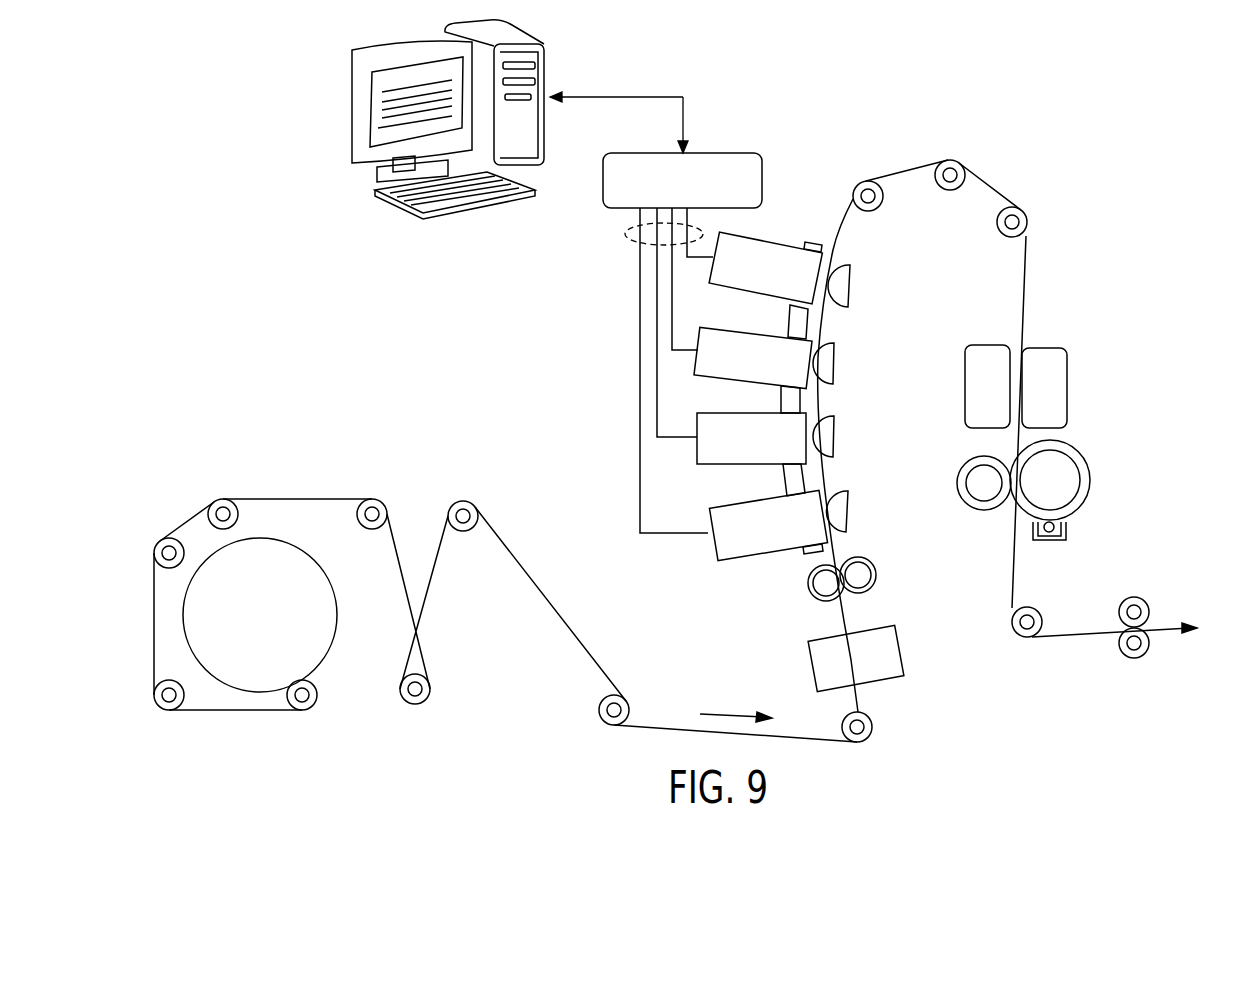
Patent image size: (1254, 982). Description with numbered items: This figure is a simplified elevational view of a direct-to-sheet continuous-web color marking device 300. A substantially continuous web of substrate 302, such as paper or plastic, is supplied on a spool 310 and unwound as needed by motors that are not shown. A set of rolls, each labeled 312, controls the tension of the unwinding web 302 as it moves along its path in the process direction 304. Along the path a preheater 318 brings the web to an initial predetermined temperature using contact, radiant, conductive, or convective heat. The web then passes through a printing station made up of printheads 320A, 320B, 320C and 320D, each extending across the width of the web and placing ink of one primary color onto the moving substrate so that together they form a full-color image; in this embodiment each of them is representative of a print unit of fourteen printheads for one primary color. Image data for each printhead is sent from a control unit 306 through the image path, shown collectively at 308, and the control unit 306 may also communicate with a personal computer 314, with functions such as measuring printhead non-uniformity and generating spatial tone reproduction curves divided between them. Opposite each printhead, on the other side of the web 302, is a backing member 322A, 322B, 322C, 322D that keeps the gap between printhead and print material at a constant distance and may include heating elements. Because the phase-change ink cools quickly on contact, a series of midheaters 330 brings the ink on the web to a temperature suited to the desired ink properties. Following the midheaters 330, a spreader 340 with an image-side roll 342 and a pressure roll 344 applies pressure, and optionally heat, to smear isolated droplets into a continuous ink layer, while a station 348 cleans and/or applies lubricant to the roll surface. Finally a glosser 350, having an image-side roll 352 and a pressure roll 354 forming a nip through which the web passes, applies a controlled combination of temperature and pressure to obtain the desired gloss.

The color marking device 300 is at (1092, 130).
The web of substrate 302 is at (300, 498).
The process direction 304 is at (731, 713).
The control unit 306 is at (700, 194).
The image path 308 is at (625, 232).
The spool 310 is at (277, 624).
The rolls 312 is at (953, 160).
The personal computer 314 is at (546, 54).
The preheater 318 is at (906, 657).
The printhead 320A is at (790, 294).
The printhead 320B is at (778, 379).
The printhead 320C is at (774, 453).
The printhead 320D is at (790, 536).
The backing member 322A is at (855, 292).
The backing member 322B is at (841, 367).
The backing member 322C is at (841, 438).
The backing member 322D is at (854, 513).
The midheaters 330 is at (986, 345).
The spreader 340 is at (1116, 380).
The image-side roll 342 is at (1066, 484).
The pressure roll 344 is at (980, 492).
The station 348 is at (1050, 545).
The glosser 350 is at (1155, 566).
The image-side roll 352 is at (1150, 615).
The pressure roll 354 is at (1150, 645).